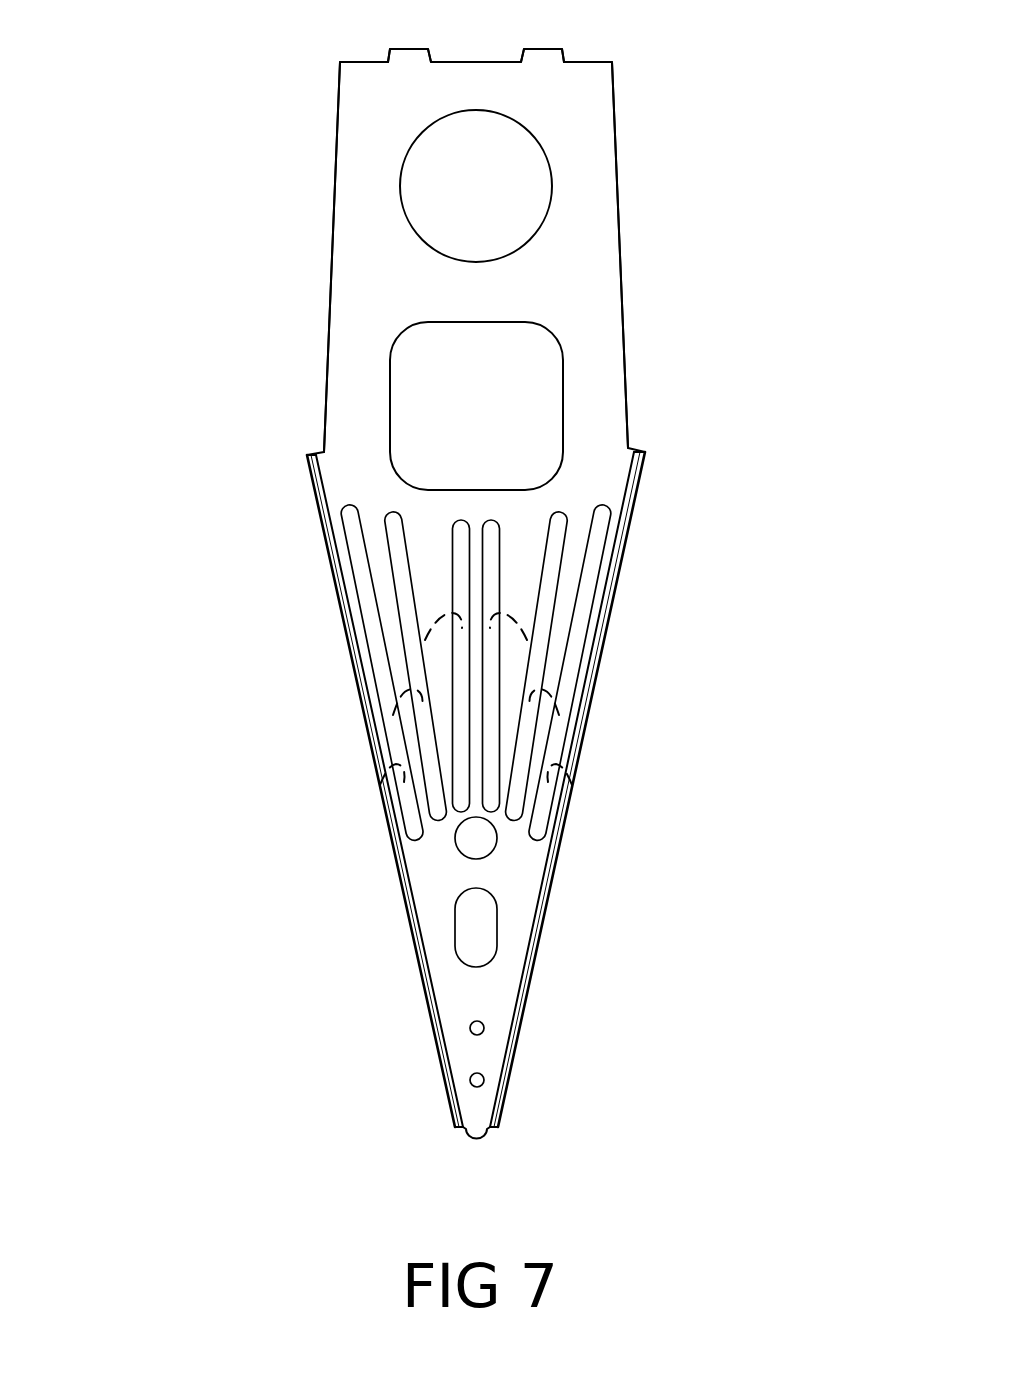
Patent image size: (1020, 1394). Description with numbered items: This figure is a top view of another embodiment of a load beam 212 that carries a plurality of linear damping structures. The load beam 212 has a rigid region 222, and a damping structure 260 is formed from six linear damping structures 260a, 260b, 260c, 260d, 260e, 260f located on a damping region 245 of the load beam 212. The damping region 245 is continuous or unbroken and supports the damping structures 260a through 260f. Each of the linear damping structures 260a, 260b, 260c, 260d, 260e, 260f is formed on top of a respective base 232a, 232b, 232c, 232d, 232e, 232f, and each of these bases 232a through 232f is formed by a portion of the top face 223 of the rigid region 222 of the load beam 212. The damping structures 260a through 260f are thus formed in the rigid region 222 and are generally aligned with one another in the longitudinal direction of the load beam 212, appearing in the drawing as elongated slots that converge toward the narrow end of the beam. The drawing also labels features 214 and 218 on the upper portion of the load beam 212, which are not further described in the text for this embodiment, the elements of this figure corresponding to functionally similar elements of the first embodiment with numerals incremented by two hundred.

The load beam 212 is at (623, 333).
The upper end 214 is at (615, 148).
The side edge 218 is at (325, 362).
The top face 223 is at (610, 450).
The damping region 245 is at (553, 863).
The rigid region 222 is at (520, 1035).
The damping structure 260 is at (474, 597).
The linear damping structure 260a is at (345, 508).
The linear damping structure 260b is at (390, 512).
The linear damping structure 260c is at (455, 522).
The linear damping structure 260d is at (497, 522).
The linear damping structure 260e is at (560, 512).
The linear damping structure 260f is at (697, 672).
The base 232a is at (380, 785).
The base 232b is at (393, 715).
The base 232c is at (425, 640).
The base 232d is at (527, 640).
The base 232e is at (559, 715).
The base 232f is at (572, 785).